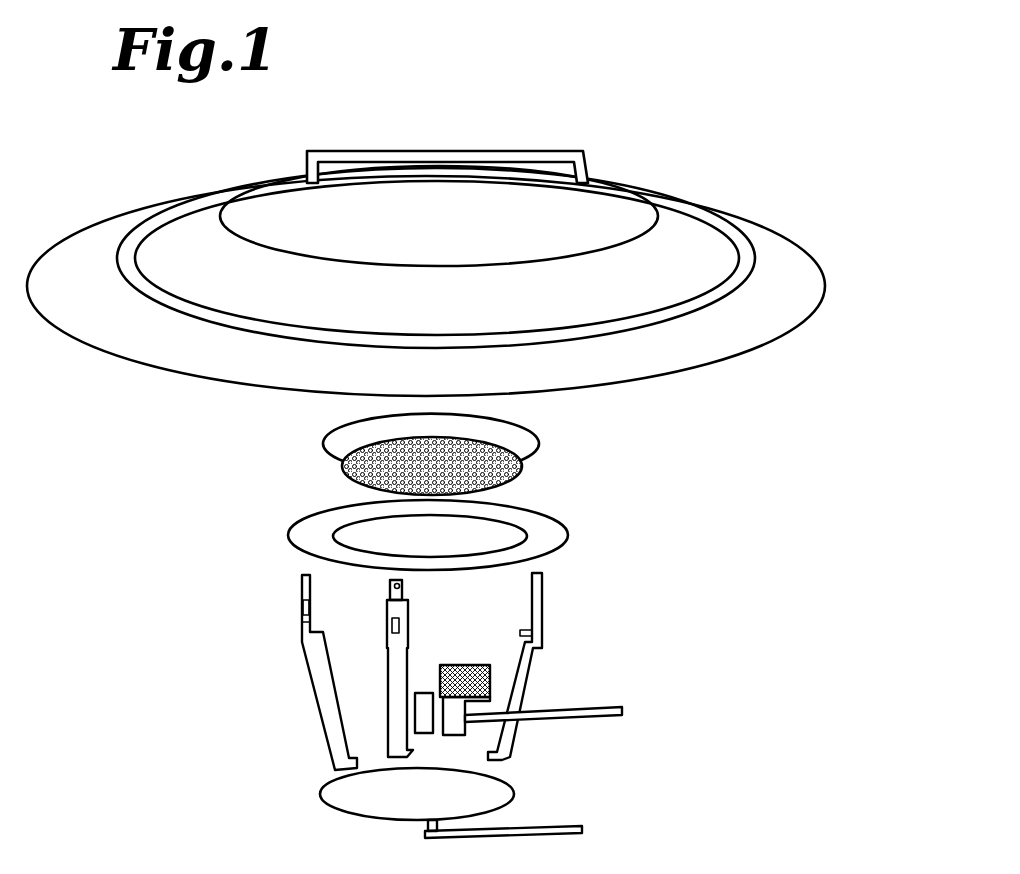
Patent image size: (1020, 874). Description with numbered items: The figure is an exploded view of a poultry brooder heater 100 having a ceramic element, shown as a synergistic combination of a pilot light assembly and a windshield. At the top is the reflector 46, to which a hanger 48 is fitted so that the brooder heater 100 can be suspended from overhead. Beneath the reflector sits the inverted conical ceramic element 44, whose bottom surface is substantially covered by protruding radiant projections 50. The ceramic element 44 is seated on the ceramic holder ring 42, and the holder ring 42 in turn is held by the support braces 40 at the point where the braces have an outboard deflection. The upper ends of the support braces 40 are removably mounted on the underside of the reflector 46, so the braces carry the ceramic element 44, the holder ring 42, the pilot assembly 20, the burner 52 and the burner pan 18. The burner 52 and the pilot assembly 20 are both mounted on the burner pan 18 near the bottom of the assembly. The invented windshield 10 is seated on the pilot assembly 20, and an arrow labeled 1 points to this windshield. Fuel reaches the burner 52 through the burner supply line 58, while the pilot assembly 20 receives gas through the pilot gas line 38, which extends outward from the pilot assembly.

The poultry brooder heater 100 is at (230, 431).
The reflector 46 is at (703, 352).
The hanger 48 is at (586, 166).
The ceramic element 44 is at (530, 442).
The radiant projections 50 is at (372, 462).
The ceramic holder ring 42 is at (565, 543).
The support braces 40 is at (387, 609).
The pilot assembly 20 is at (448, 733).
The windshield 10 is at (460, 663).
The light source 1 is at (496, 681).
The pilot gas line 38 is at (590, 718).
The burner 52 is at (423, 728).
The burner pan 18 is at (353, 800).
The burner supply line 58 is at (582, 830).